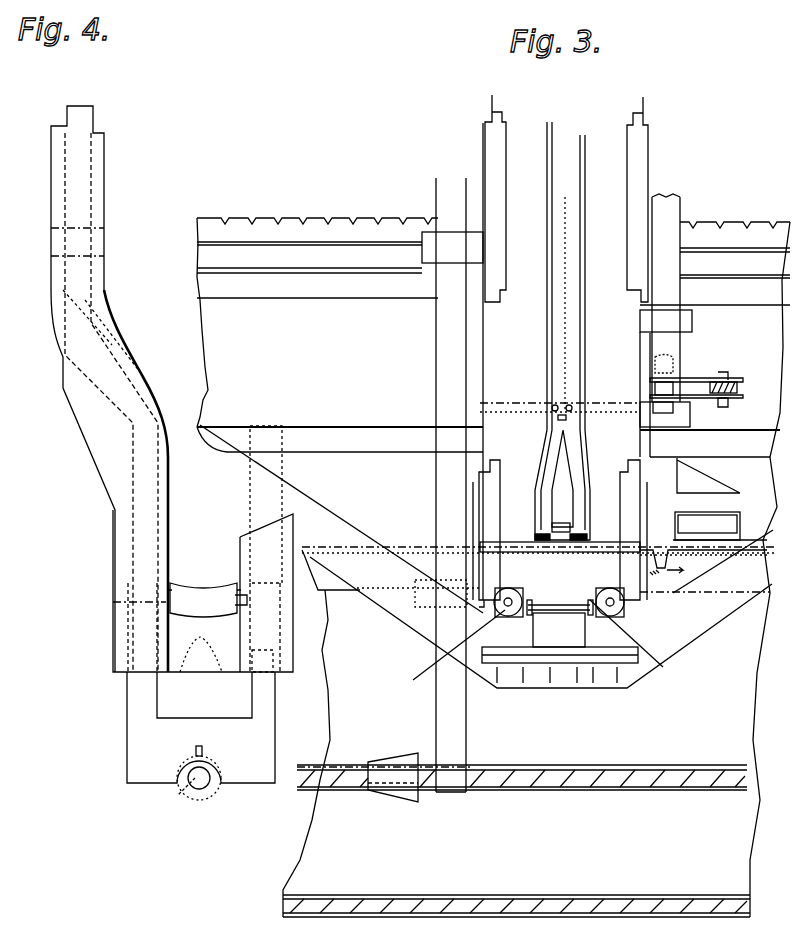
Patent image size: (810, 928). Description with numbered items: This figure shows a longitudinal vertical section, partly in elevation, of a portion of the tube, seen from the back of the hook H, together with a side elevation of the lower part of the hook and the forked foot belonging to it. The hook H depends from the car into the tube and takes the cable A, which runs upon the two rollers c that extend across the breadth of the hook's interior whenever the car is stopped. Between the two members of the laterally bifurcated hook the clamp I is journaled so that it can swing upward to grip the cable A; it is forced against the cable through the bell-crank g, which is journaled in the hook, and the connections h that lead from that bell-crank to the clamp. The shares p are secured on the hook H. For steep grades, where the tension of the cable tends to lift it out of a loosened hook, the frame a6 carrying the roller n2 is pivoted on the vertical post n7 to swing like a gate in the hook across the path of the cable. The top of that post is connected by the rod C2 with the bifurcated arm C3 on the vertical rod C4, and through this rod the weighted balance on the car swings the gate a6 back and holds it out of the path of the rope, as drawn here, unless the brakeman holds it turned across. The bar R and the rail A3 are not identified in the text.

In FIG. 4, the hook H is at (172, 389).
In FIG. 3, the hook H is at (560, 351).
In FIG. 4, the bar R is at (201, 736).
In FIG. 3, the bar R is at (452, 485).
In FIG. 4, the rail plate A3 is at (170, 795).
In FIG. 3, the rail plate A3 is at (522, 771).
In FIG. 3, the cable A is at (493, 567).
In FIG. 3, the vertical rod C4 is at (694, 342).
In FIG. 3, the bifurcated arm C3 is at (735, 383).
In FIG. 3, the rod C2 is at (743, 389).
In FIG. 3, the frame (gate) a6 is at (713, 485).
In FIG. 3, the roller n2 is at (720, 526).
In FIG. 3, the vertical post n7 is at (705, 560).
In FIG. 3, the clamp I is at (540, 622).
In FIG. 3, the bell-crank g is at (545, 565).
In FIG. 3, the shares p is at (486, 556).
In FIG. 3, the connections h is at (534, 646).
In FIG. 3, the rollers c is at (560, 415).